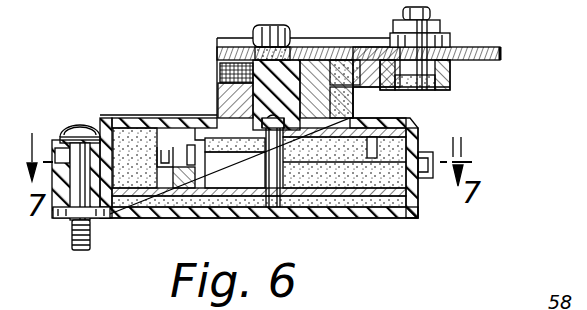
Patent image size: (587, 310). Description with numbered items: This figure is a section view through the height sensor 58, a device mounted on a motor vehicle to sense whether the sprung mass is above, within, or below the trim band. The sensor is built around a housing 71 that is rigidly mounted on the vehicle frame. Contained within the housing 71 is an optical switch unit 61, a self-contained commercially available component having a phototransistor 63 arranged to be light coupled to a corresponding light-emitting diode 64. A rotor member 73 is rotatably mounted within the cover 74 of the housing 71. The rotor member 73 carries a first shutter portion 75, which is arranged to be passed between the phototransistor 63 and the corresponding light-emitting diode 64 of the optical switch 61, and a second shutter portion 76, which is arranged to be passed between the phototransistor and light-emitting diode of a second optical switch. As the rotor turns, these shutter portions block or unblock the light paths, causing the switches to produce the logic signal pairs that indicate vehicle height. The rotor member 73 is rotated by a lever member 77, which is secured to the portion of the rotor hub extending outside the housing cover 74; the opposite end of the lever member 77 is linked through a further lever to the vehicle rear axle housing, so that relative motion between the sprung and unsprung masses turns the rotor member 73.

The height sensor 58 is at (158, 92).
The optical switch unit 61 is at (166, 183).
The phototransistor 63 is at (206, 168).
The light-emitting diode 64 is at (166, 154).
The housing 71 is at (385, 208).
The rotor member 73 is at (194, 128).
The cover 74 is at (400, 118).
The first shutter portion 75 is at (172, 146).
The second shutter portion 76 is at (367, 150).
The lever member 77 is at (487, 53).